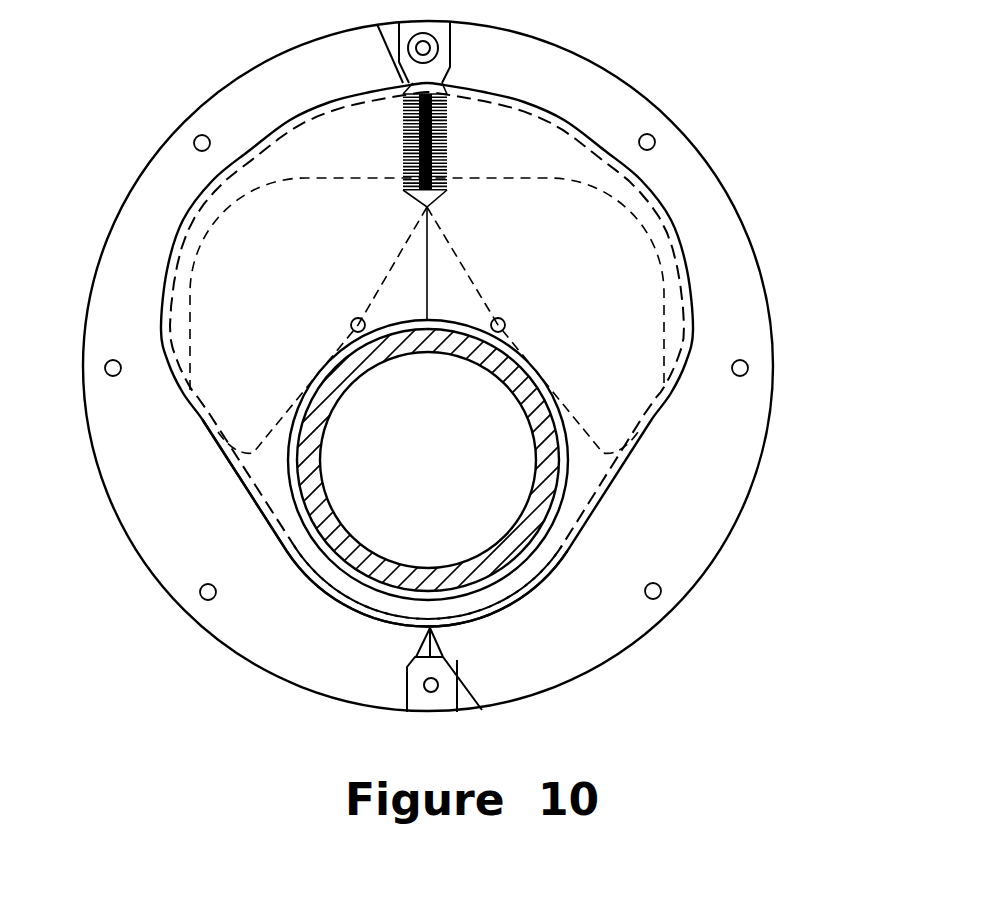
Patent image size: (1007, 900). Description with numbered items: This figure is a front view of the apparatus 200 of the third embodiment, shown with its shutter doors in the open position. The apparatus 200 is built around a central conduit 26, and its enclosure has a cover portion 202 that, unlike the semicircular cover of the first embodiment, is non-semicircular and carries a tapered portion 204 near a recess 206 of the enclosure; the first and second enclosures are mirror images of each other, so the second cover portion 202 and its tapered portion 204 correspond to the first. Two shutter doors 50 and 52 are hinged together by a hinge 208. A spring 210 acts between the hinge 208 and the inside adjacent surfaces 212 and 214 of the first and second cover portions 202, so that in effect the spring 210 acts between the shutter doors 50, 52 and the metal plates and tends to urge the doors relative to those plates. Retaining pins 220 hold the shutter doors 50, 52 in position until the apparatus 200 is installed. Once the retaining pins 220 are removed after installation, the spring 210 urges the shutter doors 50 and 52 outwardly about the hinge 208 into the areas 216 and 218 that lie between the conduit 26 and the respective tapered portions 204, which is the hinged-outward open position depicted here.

The conduit 26 is at (512, 552).
The shutter door 50 is at (593, 252).
The shutter door 52 is at (293, 273).
The apparatus 200 is at (655, 106).
The cover portion 202 is at (573, 523).
The tapered portion 204 is at (597, 518).
The recess 206 is at (503, 590).
The hinge 208 is at (447, 200).
The spring 210 is at (447, 117).
The inside adjacent surface 212 is at (443, 80).
The inside adjacent surface 214 is at (386, 52).
The area 216 is at (588, 470).
The area 218 is at (274, 473).
The retaining pin 220 is at (357, 318).